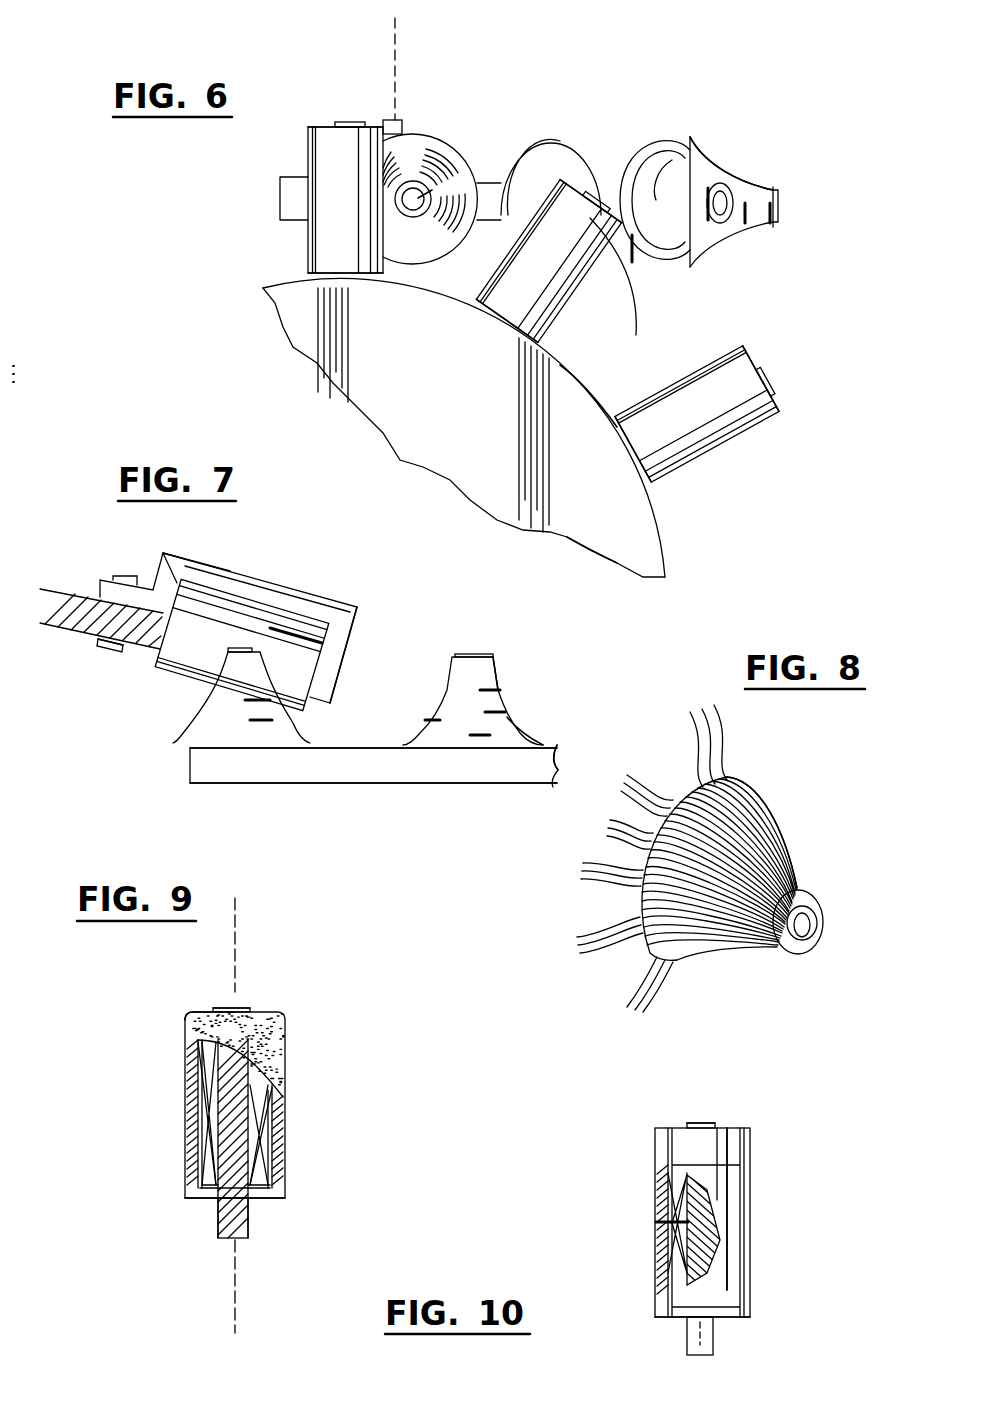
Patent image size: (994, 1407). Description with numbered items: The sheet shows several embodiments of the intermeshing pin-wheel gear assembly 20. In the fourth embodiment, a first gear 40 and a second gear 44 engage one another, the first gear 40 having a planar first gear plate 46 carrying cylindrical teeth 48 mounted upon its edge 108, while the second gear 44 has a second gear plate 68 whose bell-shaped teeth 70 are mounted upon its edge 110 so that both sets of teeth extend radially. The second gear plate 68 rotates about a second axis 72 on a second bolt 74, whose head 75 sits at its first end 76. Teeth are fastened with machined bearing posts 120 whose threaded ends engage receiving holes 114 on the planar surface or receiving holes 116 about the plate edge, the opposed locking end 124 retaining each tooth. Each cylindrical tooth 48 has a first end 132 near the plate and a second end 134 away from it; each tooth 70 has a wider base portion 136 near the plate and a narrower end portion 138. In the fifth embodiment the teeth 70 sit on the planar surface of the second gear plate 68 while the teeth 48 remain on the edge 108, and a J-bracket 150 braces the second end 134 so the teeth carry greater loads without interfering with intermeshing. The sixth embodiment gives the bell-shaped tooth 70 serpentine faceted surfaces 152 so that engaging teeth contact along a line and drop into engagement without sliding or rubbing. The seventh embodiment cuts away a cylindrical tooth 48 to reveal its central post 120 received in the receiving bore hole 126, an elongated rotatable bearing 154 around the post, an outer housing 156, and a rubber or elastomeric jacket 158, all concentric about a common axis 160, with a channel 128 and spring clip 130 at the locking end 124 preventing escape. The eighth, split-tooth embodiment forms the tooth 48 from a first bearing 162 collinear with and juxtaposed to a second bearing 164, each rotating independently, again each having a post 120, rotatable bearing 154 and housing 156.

In FIG. 6, the assembly 20 is at (212, 320).
In FIG. 7, the assembly 20 is at (168, 788).
In FIG. 6, the first gear 40 is at (410, 440).
In FIG. 7, the first gear 40 is at (63, 630).
In FIG. 6, the second gear 44 is at (488, 180).
In FIG. 7, the second gear 44 is at (285, 775).
In FIG. 6, the first gear plate 46 is at (497, 520).
In FIG. 7, the first gear plate 46 is at (80, 580).
In FIG. 6, the teeth 48 is at (543, 304).
In FIG. 7, the teeth 48 is at (242, 644).
In FIG. 9, the teeth 48 is at (295, 1024).
In FIG. 10, the teeth 48 is at (752, 1142).
In FIG. 6, the second gear plate 68 is at (600, 168).
In FIG. 7, the second gear plate 68 is at (420, 780).
In FIG. 6, the teeth 70 is at (415, 145).
In FIG. 7, the teeth 70 is at (207, 717).
In FIG. 8, the teeth 70 is at (763, 823).
In FIG. 6, the second axis 72 is at (398, 36).
In FIG. 6, the second bolt 74 is at (455, 97).
In FIG. 6, the head 75 is at (455, 97).
In FIG. 6, the first end 76 is at (398, 120).
In FIG. 6, the edge 108 is at (591, 383).
In FIG. 6, the edge 110 is at (280, 196).
In FIG. 7, the receiving holes 114 is at (237, 752).
In FIG. 6, the receiving holes 116 is at (348, 292).
In FIG. 7, the receiving holes 116 is at (150, 655).
In FIG. 6, the bearing post 120 is at (810, 225).
In FIG. 7, the bearing post 120 is at (257, 650).
In FIG. 8, the bearing post 120 is at (800, 930).
In FIG. 9, the bearing post 120 is at (245, 1006).
In FIG. 10, the bearing post 120 is at (714, 1123).
In FIG. 6, the locking end 124 is at (569, 298).
In FIG. 7, the locking end 124 is at (407, 588).
In FIG. 8, the locking end 124 is at (832, 966).
In FIG. 9, the locking end 124 is at (252, 1084).
In FIG. 10, the locking end 124 is at (713, 1197).
In FIG. 9, the receiving bore hole 126 is at (241, 1133).
In FIG. 10, the receiving bore hole 126 is at (672, 1210).
In FIG. 9, the channel 128 is at (219, 1006).
In FIG. 10, the channel 128 is at (690, 1123).
In FIG. 9, the spring clip 130 is at (256, 1010).
In FIG. 10, the spring clip 130 is at (740, 1126).
In FIG. 6, the first end 132 is at (308, 270).
In FIG. 7, the first end 132 is at (193, 587).
In FIG. 9, the first end 132 is at (187, 1181).
In FIG. 10, the first end 132 is at (750, 1308).
In FIG. 6, the second end 134 is at (308, 130).
In FIG. 7, the second end 134 is at (325, 615).
In FIG. 9, the second end 134 is at (185, 1018).
In FIG. 10, the second end 134 is at (657, 1135).
In FIG. 6, the base portion 136 is at (702, 142).
In FIG. 7, the base portion 136 is at (517, 727).
In FIG. 8, the base portion 136 is at (760, 790).
In FIG. 6, the end portion 138 is at (778, 188).
In FIG. 7, the end portion 138 is at (493, 668).
In FIG. 8, the end portion 138 is at (807, 890).
In FIG. 7, the J-bracket 150 is at (277, 600).
In FIG. 8, the faceted surfaces 152 is at (631, 854).
In FIG. 9, the rotatable bearing 154 is at (187, 1108).
In FIG. 10, the rotatable bearing 154 is at (662, 1182).
In FIG. 9, the housing 156 is at (187, 1067).
In FIG. 10, the housing 156 is at (655, 1222).
In FIG. 9, the jacket 158 is at (187, 1133).
In FIG. 9, the common axis 160 is at (238, 914).
In FIG. 10, the first bearing 162 is at (750, 1268).
In FIG. 10, the second bearing 164 is at (750, 1196).